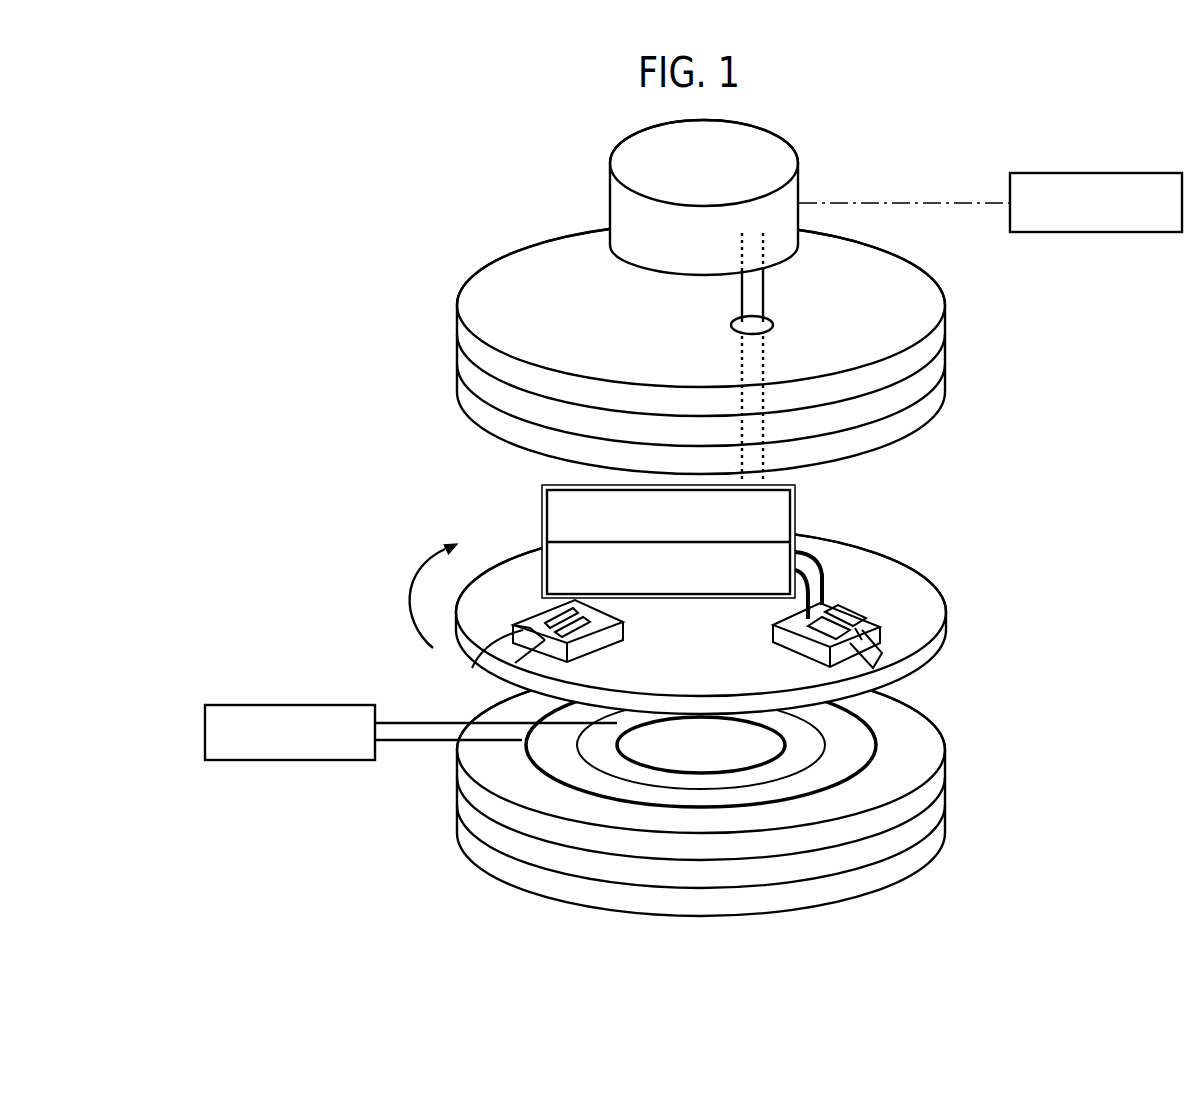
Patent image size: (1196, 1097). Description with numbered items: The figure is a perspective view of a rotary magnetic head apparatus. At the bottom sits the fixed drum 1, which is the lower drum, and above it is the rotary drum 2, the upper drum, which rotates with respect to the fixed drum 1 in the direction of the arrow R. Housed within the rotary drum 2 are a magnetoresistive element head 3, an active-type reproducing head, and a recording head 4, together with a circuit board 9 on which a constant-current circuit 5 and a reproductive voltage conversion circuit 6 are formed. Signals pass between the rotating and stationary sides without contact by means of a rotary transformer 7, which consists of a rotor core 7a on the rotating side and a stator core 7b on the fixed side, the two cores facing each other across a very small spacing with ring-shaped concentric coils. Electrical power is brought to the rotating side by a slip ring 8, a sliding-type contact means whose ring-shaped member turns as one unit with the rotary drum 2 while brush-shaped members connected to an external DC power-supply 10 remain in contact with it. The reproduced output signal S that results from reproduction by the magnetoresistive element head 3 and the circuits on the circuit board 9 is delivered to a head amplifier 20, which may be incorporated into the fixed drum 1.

The fixed drum 1 is at (932, 843).
The rotary drum 2 is at (930, 407).
The magnetoresistive element head 3 is at (860, 625).
The recording head 4 is at (473, 667).
The constant-current circuit 5 is at (795, 503).
The reproductive voltage conversion circuit 6 is at (672, 598).
The rotary transformer 7 is at (783, 745).
The rotor core 7a is at (923, 668).
The stator core 7b is at (873, 747).
The slip ring 8 is at (780, 219).
The circuit board 9 is at (709, 600).
The DC power-supply 10 is at (1100, 172).
The head amplifier 20 is at (288, 704).
The arrow R is at (403, 603).
The reproduced output signal S is at (408, 725).